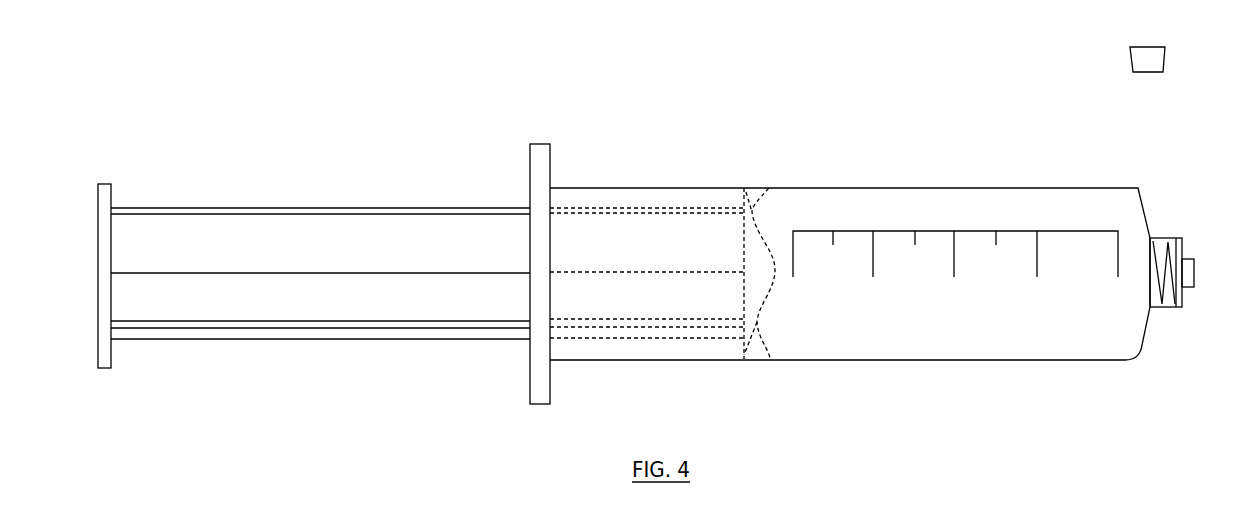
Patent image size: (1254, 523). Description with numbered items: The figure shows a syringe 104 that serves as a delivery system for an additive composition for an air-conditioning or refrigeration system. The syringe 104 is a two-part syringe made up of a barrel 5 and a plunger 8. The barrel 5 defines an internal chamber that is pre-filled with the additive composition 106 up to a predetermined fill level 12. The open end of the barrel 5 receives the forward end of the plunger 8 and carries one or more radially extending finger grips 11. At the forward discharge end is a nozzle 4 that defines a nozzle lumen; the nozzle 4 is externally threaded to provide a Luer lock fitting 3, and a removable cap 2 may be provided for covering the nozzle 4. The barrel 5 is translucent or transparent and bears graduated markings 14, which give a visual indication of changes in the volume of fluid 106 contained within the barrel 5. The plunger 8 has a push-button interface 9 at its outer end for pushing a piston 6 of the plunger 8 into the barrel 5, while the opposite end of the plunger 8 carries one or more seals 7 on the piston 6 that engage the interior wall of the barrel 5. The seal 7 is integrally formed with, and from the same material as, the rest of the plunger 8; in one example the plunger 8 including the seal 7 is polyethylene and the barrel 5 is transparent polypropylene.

The removable cap 2 is at (1130, 60).
The Luer lock fitting 3 is at (1163, 238).
The nozzle 4 is at (1195, 278).
The barrel 5 is at (898, 360).
The piston 6 is at (628, 226).
The seal 7 is at (769, 188).
The plunger 8 is at (205, 343).
The push-button interface 9 is at (98, 205).
The finger grips 11 is at (550, 165).
The predetermined fill level 12 is at (770, 358).
The graduated markings 14 is at (886, 231).
The syringe 104 is at (948, 128).
The additive composition 106 is at (1045, 313).